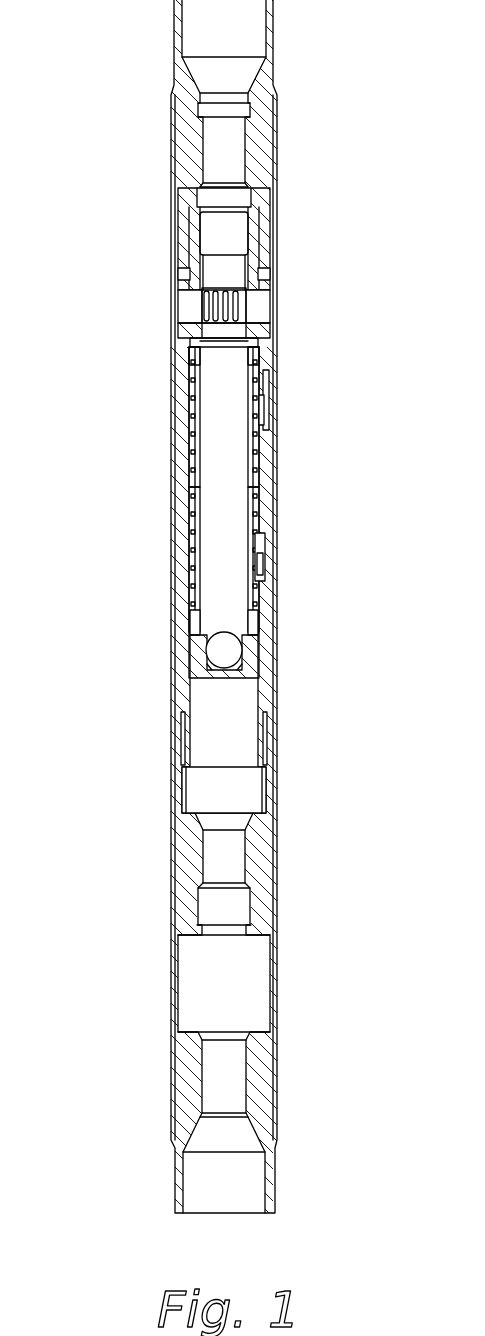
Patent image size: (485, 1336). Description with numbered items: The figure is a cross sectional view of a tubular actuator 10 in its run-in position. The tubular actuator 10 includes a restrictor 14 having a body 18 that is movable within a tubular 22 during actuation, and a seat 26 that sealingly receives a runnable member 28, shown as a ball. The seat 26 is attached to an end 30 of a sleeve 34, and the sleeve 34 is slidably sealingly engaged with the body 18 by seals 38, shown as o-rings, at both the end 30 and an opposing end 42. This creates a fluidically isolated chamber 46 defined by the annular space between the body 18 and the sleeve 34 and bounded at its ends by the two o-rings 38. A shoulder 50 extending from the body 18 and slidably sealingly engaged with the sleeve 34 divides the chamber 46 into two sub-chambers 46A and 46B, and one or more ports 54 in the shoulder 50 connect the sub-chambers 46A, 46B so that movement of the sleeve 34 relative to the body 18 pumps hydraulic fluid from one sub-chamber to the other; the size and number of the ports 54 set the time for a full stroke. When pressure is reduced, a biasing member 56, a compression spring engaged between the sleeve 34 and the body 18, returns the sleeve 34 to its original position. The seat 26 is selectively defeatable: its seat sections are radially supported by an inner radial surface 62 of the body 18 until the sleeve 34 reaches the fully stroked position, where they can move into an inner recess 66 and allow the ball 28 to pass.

The tubular actuator 10 is at (112, 154).
The restrictor 14 is at (176, 650).
The body 18 is at (263, 620).
The tubular 22 is at (268, 737).
The seat 26 is at (248, 665).
The runnable member 28 is at (217, 638).
The end 30 is at (232, 651).
The sleeve 34 is at (268, 382).
The seals 38 is at (257, 347).
The opposing end 42 is at (176, 344).
The chamber 46 is at (267, 489).
The sub-chamber 46A is at (258, 452).
The sub-chamber 46B is at (255, 595).
The shoulder 50 is at (262, 541).
The ports 54 is at (258, 568).
The biasing member 56 is at (264, 408).
The inner radial surface 62 is at (203, 744).
The inner recess 66 is at (262, 800).